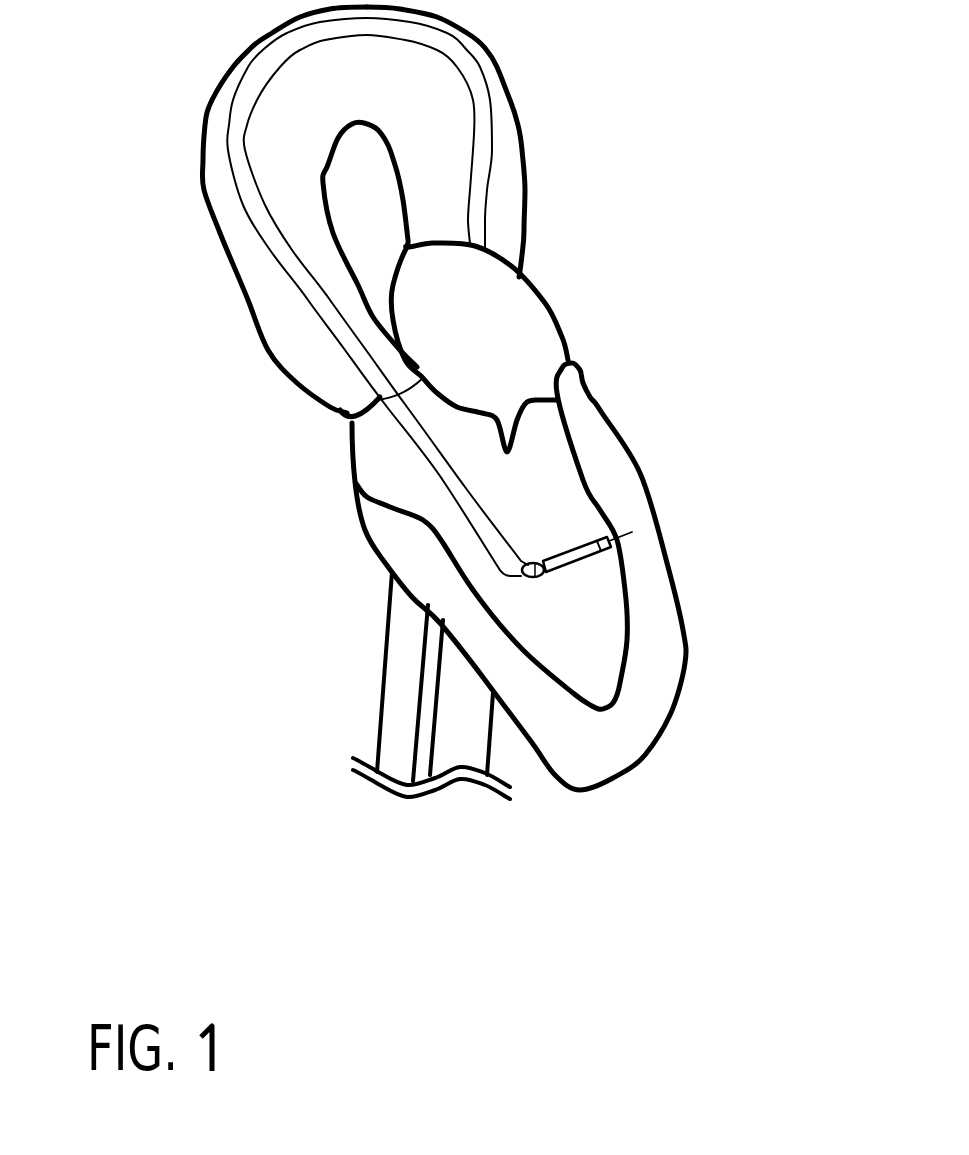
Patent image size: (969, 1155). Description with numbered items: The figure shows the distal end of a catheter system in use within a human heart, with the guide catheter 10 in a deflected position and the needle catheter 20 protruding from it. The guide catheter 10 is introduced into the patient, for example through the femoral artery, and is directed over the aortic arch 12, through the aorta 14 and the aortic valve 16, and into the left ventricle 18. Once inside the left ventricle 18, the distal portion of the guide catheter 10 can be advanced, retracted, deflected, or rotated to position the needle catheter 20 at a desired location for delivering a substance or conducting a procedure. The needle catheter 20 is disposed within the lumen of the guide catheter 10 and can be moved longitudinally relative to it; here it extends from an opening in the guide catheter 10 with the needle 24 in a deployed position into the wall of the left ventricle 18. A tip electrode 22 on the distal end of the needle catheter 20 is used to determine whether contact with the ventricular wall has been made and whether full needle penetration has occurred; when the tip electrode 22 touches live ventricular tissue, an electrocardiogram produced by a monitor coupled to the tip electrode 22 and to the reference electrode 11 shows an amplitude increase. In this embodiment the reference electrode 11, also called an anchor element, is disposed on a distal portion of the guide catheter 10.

The guide catheter 10 is at (240, 158).
The reference electrode 11 is at (526, 557).
The aortic arch 12 is at (456, 33).
The aorta 14 is at (225, 262).
The aortic valve 16 is at (363, 407).
The left ventricle 18 is at (680, 703).
The needle catheter 20 is at (575, 540).
The tip electrode 22 is at (603, 550).
The needle 24 is at (627, 542).